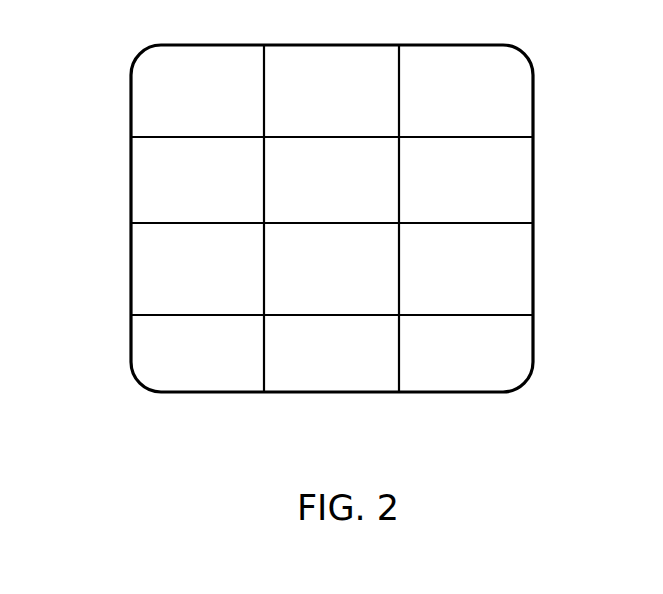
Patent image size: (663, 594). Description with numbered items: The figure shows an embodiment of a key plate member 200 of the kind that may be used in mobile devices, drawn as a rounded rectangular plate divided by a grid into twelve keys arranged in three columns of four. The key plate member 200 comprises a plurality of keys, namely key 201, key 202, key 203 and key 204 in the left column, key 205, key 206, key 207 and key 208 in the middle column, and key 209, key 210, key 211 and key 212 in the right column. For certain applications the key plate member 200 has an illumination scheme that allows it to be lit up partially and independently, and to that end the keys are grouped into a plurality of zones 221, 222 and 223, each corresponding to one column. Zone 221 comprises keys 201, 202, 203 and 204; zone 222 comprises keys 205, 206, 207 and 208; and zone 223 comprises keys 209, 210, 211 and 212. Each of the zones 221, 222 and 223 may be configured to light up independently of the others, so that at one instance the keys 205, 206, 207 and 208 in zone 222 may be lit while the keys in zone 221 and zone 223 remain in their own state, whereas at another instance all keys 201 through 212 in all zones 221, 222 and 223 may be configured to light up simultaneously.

The key plate member 200 is at (97, 25).
The key 201 is at (172, 99).
The key 202 is at (172, 192).
The key 203 is at (172, 275).
The key 204 is at (172, 359).
The key 205 is at (308, 98).
The key 206 is at (308, 192).
The key 207 is at (308, 274).
The key 208 is at (308, 358).
The key 209 is at (440, 97).
The key 210 is at (442, 191).
The key 211 is at (442, 273).
The key 212 is at (442, 355).
The zone 221 is at (163, 375).
The zone 222 is at (295, 375).
The zone 223 is at (437, 372).